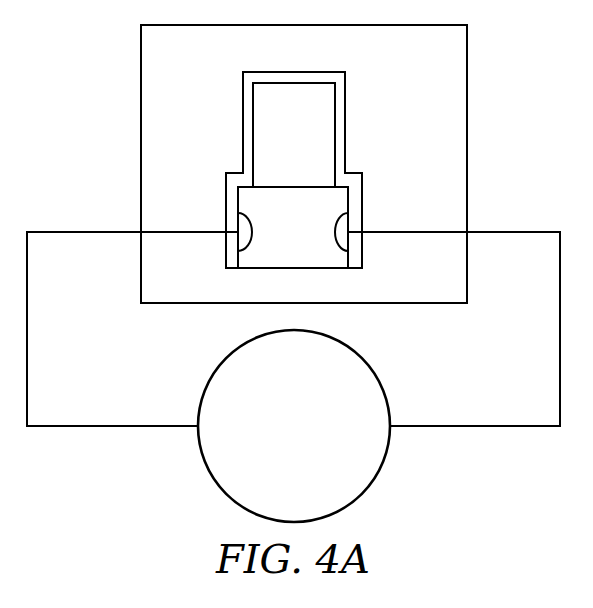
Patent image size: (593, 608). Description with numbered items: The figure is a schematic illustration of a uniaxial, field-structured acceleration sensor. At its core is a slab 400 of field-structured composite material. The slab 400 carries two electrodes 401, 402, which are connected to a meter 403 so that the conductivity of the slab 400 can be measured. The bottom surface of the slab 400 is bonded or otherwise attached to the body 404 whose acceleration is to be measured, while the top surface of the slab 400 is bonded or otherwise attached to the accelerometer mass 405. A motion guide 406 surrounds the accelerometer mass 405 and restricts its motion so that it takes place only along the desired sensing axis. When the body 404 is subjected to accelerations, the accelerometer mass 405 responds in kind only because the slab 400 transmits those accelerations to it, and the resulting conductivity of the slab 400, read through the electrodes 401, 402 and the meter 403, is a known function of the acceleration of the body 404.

The slab 400 is at (273, 243).
The electrode 401 is at (132, 307).
The electrode 402 is at (454, 307).
The meter 403 is at (274, 437).
The body 404 is at (273, 297).
The accelerometer mass 405 is at (273, 125).
The motion guide 406 is at (345, 127).